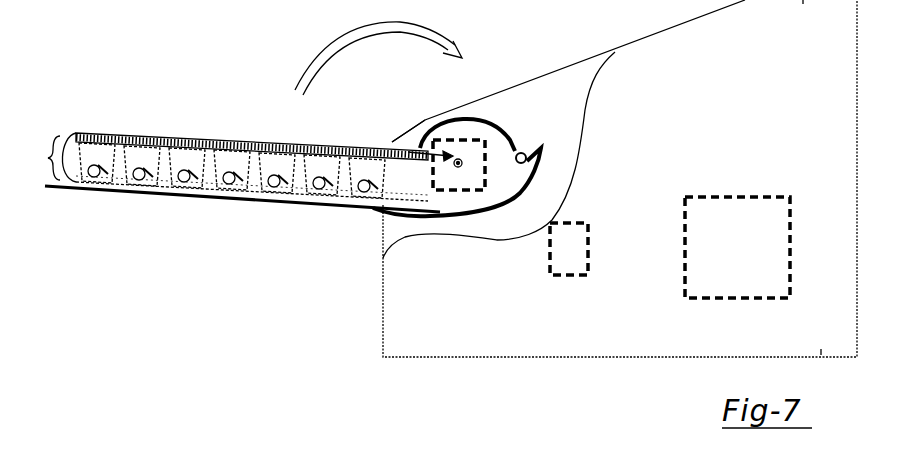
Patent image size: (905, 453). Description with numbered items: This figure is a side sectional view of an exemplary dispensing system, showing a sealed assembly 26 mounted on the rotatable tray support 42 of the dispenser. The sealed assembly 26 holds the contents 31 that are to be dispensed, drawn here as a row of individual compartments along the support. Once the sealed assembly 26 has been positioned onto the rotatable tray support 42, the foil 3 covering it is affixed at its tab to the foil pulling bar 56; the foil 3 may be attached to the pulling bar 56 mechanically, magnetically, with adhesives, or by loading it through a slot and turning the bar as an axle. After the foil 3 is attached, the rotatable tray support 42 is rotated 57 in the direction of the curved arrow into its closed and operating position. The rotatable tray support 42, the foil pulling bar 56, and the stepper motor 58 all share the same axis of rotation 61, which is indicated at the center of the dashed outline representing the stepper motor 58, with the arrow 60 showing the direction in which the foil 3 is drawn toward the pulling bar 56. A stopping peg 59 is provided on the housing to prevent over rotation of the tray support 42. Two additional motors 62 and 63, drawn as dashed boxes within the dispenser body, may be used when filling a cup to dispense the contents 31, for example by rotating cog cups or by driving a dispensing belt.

The foil 3 is at (413, 140).
The sealed assembly 26 is at (47, 158).
The contents 31 is at (232, 170).
The rotatable tray support 42 is at (183, 206).
The foil pulling bar 56 is at (455, 166).
The rotation 57 is at (378, 56).
The stepper motor 58 is at (457, 167).
The stopping peg 59 is at (522, 147).
The travel direction 60 is at (442, 151).
The axis of rotation 61 is at (463, 173).
The additional motor 62 is at (569, 249).
The additional motor 63 is at (737, 247).